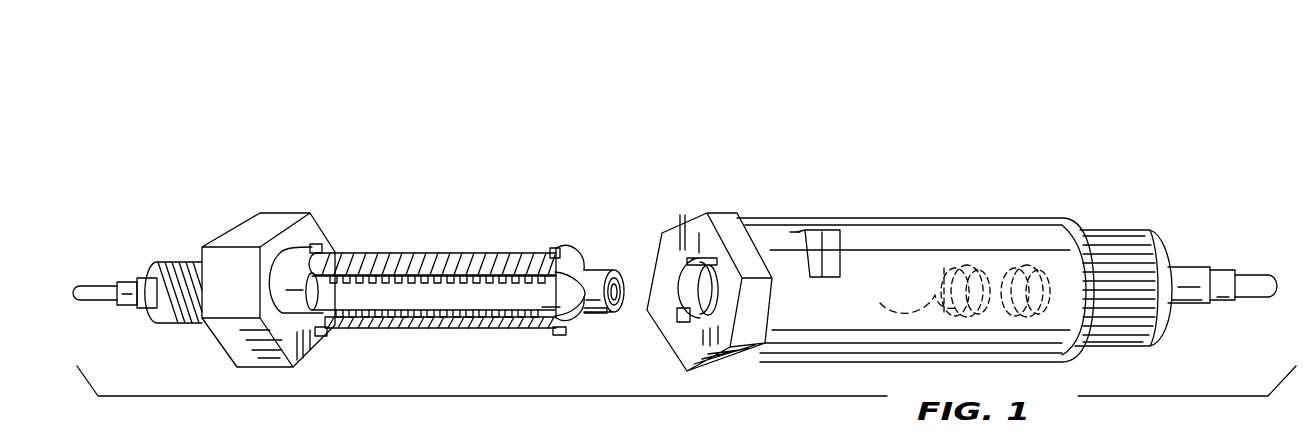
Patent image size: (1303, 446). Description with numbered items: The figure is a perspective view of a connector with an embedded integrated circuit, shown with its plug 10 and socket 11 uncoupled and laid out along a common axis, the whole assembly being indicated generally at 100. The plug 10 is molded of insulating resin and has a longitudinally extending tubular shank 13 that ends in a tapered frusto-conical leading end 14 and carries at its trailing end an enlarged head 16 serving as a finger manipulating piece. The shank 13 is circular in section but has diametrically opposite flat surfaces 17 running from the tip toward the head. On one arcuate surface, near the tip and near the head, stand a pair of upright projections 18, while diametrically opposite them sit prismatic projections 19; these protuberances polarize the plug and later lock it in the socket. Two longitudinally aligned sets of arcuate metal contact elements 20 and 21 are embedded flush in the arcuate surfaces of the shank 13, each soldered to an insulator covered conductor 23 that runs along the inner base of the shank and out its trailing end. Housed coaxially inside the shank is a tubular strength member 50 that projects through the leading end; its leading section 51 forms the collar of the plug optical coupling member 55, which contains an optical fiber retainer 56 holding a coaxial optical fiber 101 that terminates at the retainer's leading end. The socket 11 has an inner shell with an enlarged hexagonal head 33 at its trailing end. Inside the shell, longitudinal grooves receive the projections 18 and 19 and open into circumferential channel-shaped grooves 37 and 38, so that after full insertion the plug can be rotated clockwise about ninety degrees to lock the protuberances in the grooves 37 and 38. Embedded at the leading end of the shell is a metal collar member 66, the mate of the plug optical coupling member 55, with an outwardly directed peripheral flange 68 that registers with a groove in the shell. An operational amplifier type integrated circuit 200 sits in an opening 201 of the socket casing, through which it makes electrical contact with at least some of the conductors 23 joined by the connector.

The plug 10 is at (407, 234).
The socket 11 is at (886, 196).
The tubular shank 13 is at (452, 342).
The tapered frusto-conical leading end 14 is at (577, 262).
The enlarged head 16 is at (230, 337).
The flat surfaces 17 is at (563, 294).
The upright projections 18 is at (320, 250).
The prismatic projections 19 is at (328, 336).
The arcuate metal contact elements 20 is at (470, 250).
The arcuate contact elements 21 is at (470, 328).
The insulator covered conductor 23 is at (1112, 235).
The enlarged head 33 is at (675, 353).
The circumferentially extending channel-shaped grooves 37 is at (901, 298).
The channel-shaped circumferential grooves 38 is at (677, 232).
The tubular strength member 50 is at (148, 277).
The leading end section 51 is at (595, 314).
The plug optical coupling member 55 is at (608, 251).
The optical fiber retainer 56 is at (128, 305).
The collar member 66 is at (990, 270).
The outwardly directed peripheral flange 68 is at (1020, 268).
The assembly 100 is at (787, 160).
The optical fiber 101 is at (78, 296).
The integrated circuit 200 is at (812, 230).
The opening 201 is at (790, 232).